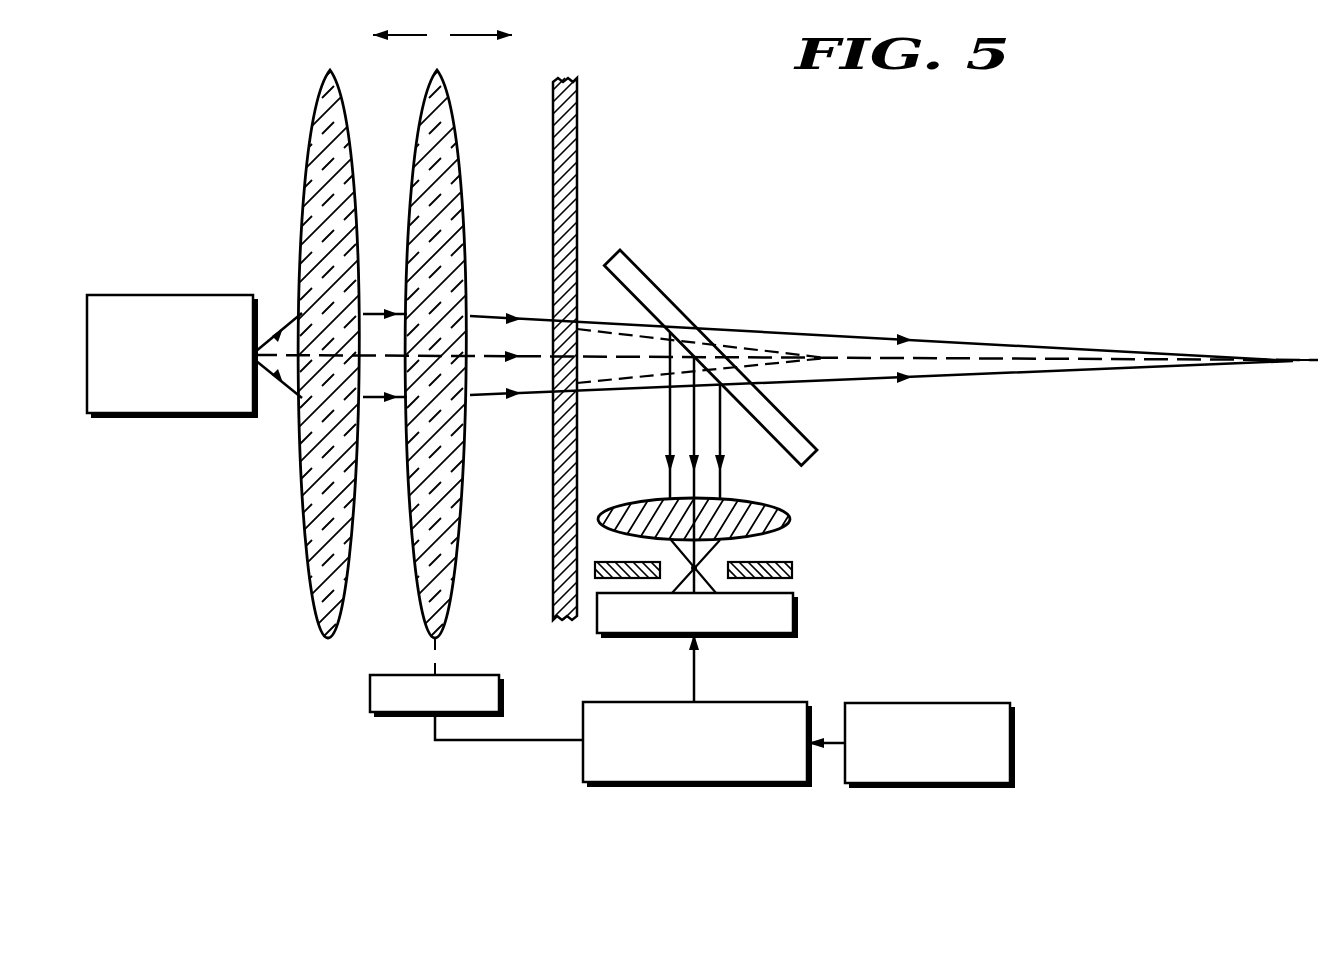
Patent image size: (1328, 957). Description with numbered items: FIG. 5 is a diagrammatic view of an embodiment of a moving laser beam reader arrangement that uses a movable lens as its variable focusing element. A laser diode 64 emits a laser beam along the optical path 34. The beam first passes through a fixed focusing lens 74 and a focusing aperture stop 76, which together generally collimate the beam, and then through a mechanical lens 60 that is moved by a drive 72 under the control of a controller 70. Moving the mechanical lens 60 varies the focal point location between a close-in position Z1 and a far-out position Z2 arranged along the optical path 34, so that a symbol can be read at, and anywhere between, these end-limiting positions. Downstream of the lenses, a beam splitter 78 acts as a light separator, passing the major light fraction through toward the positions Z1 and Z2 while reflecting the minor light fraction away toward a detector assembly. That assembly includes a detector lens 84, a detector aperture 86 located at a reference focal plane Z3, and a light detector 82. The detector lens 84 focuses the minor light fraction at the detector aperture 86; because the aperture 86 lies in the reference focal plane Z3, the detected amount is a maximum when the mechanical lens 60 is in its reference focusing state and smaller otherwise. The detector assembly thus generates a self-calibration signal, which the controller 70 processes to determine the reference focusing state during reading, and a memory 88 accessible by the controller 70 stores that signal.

The laser diode 64 is at (168, 295).
The fixed focusing lens 74 is at (320, 120).
The mechanical lens 60 is at (445, 120).
The focusing aperture stop 76 is at (578, 100).
The beam splitter 78 is at (660, 291).
The optical path 34 is at (962, 355).
The close-in position Z1 is at (827, 356).
The far-out position Z2 is at (1268, 362).
The detector lens 84 is at (775, 500).
The reference focal plane Z3 is at (700, 565).
The detector aperture 86 is at (793, 570).
The light detector 82 is at (655, 634).
The controller 70 is at (697, 783).
The memory 88 is at (928, 784).
The drive 72 is at (410, 713).